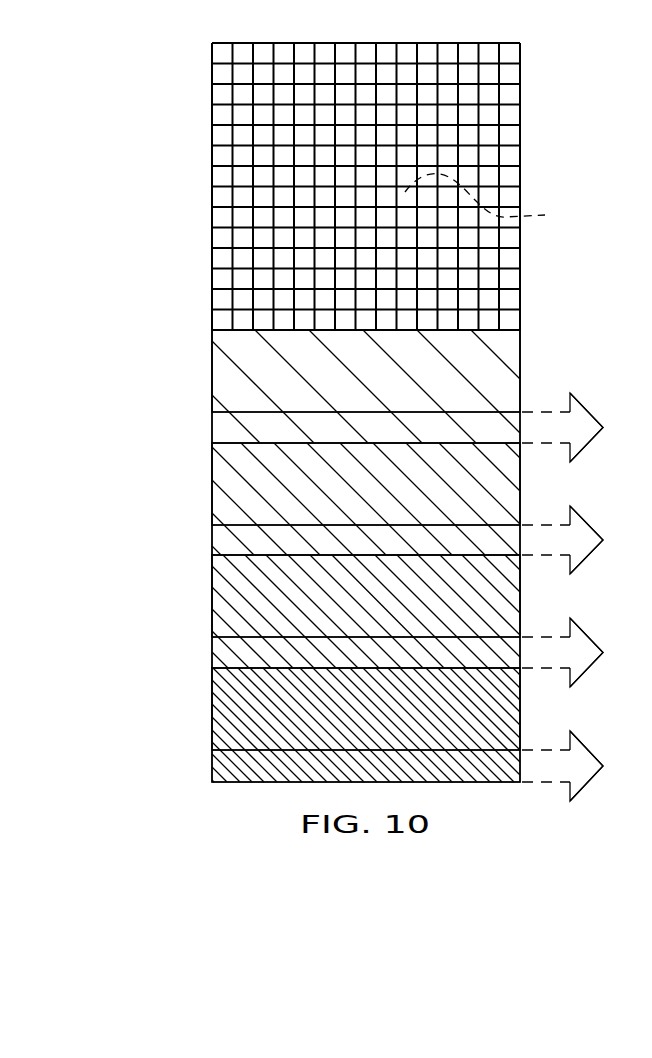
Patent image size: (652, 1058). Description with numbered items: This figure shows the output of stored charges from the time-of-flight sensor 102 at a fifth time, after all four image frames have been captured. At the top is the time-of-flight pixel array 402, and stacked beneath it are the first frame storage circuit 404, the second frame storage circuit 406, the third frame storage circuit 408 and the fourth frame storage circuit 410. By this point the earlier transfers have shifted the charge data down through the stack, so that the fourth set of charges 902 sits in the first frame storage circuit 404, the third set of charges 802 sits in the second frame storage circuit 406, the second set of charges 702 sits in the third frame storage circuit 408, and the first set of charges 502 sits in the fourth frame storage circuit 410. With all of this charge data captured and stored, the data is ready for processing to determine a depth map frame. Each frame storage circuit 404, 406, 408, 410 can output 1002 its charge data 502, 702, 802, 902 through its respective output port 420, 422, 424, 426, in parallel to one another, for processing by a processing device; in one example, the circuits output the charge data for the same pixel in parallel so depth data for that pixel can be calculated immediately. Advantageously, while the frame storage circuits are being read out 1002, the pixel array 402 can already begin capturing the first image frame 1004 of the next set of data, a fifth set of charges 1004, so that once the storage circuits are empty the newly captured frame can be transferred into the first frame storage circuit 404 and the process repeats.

The time-of-flight sensor 102 is at (249, 796).
The time-of-flight pixel array 402 is at (193, 45).
The first frame storage circuit 404 is at (122, 333).
The second frame storage circuit 406 is at (122, 446).
The third frame storage circuit 408 is at (122, 558).
The fourth frame storage circuit 410 is at (122, 671).
The output port 420 is at (522, 410).
The output port 422 is at (522, 523).
The output port 424 is at (522, 635).
The output port 426 is at (522, 748).
The first set of charges 502 is at (213, 722).
The second set of charges 702 is at (213, 608).
The third set of charges 802 is at (213, 498).
The fourth set of charges 902 is at (213, 378).
The output 1002 is at (602, 809).
The first image frame of the next set of data 1004 is at (502, 200).